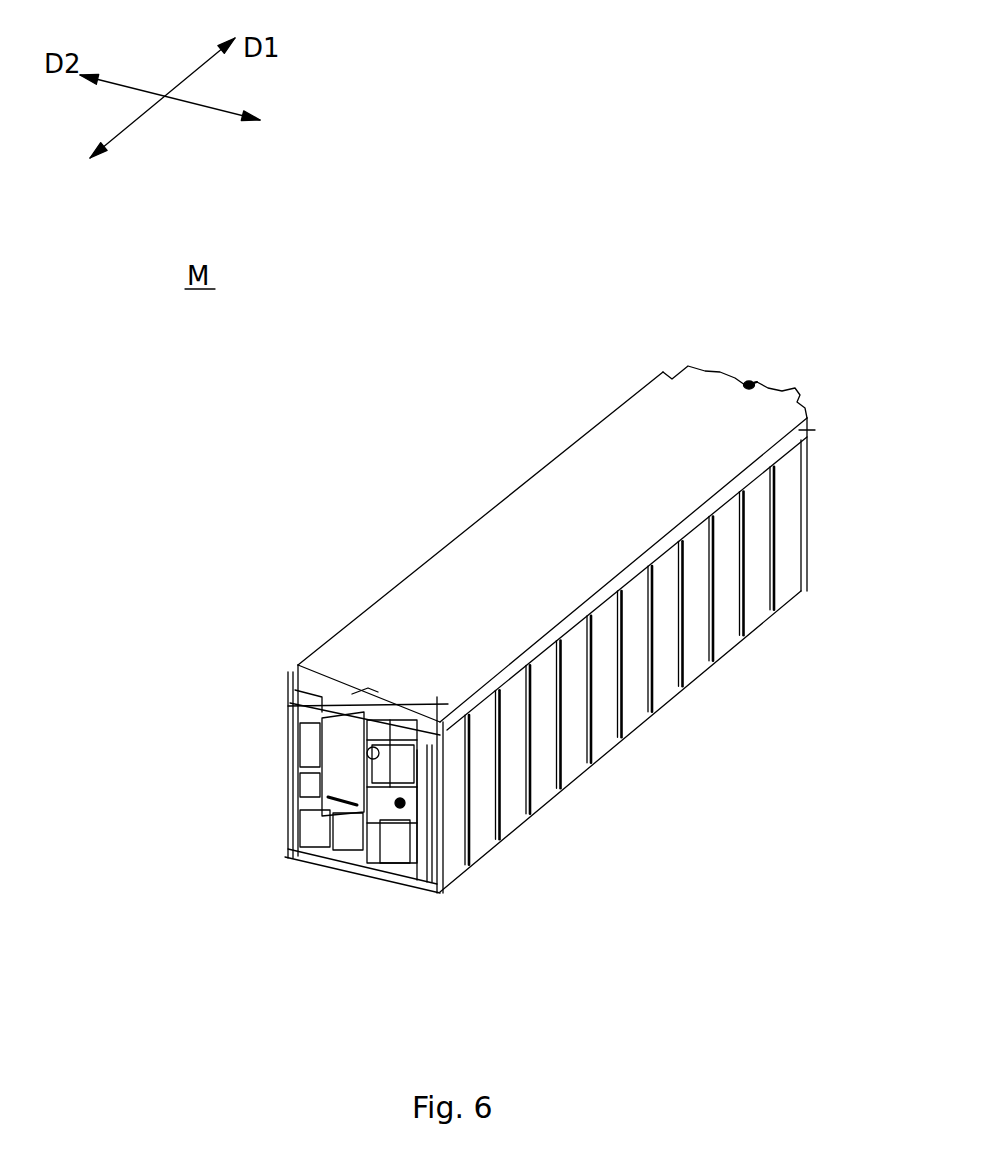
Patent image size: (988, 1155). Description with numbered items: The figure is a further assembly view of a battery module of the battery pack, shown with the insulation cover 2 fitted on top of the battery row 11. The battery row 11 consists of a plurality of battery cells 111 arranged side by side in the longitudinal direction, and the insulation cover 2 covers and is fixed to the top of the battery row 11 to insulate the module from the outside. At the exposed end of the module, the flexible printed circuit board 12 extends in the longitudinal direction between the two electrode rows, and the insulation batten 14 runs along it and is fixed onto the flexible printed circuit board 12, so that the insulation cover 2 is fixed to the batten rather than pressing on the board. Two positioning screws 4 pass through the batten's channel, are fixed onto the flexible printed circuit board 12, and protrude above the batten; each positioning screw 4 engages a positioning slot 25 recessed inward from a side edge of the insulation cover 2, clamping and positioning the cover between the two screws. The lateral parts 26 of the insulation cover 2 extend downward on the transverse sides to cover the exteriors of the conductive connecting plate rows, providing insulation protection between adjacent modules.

The insulation cover 2 is at (649, 422).
The positioning screw 4 is at (757, 382).
The battery row 11 is at (343, 898).
The flexible printed circuit board 12 is at (343, 763).
The insulation batten 14 is at (293, 708).
The positioning slot 25 is at (748, 381).
The lateral part 26 is at (815, 430).
The battery cell 111 is at (731, 613).